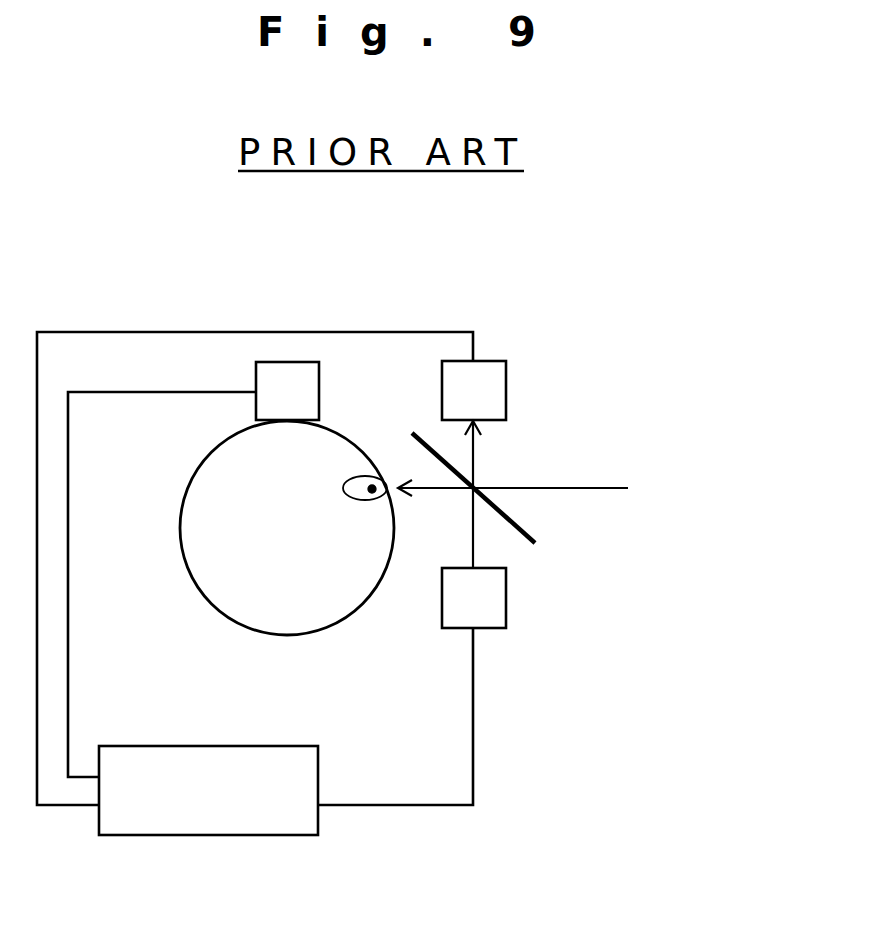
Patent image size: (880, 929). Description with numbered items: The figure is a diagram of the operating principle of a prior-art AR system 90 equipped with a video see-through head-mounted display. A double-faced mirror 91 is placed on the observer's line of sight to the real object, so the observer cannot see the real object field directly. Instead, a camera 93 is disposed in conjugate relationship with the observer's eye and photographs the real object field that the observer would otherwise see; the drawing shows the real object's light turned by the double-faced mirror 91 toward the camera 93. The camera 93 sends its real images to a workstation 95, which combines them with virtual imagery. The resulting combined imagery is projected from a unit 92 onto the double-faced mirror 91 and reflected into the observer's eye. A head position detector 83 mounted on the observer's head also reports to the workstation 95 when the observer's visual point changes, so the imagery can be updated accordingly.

The AR system 90 is at (181, 261).
The head position detector 83 is at (278, 362).
The cameras 93 is at (507, 393).
The light source 92 is at (507, 603).
The double-faced mirror 91 is at (531, 538).
The workstation 95 is at (244, 835).